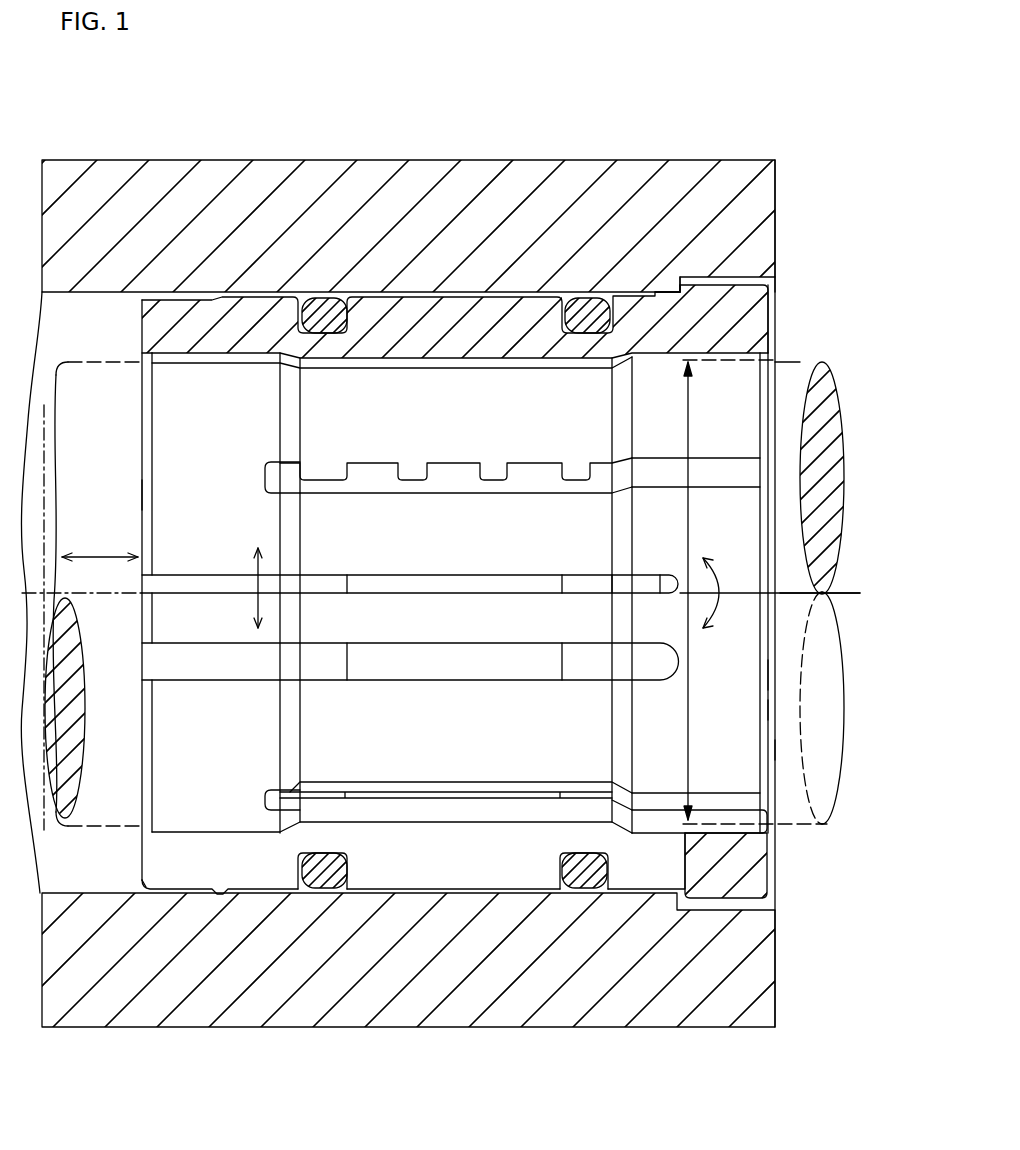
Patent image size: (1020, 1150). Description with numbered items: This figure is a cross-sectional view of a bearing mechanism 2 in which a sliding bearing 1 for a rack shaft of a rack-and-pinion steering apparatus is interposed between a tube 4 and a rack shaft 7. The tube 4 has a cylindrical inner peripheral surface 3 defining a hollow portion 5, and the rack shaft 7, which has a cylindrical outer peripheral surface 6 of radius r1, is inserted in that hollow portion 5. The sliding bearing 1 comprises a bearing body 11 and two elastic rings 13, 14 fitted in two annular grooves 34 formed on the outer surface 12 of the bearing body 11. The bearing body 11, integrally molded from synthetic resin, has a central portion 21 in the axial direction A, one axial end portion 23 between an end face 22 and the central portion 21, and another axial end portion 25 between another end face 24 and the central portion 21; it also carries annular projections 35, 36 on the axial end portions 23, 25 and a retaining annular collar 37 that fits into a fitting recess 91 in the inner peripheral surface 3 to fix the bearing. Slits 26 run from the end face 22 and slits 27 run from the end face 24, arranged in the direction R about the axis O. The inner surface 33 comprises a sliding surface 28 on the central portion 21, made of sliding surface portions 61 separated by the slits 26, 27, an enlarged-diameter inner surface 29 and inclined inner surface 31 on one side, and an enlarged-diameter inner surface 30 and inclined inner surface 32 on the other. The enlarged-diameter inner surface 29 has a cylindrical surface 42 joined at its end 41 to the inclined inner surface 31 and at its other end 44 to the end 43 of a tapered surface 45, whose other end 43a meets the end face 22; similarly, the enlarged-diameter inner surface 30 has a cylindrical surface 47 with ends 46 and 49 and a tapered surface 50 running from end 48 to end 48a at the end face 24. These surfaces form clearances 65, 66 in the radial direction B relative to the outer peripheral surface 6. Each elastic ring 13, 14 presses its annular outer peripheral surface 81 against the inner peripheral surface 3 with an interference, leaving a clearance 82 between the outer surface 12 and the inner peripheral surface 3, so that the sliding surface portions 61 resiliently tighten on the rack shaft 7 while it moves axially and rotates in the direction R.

The sliding bearing 1 is at (153, 893).
The bearing mechanism 2 is at (296, 158).
The inner peripheral surface 3 is at (85, 300).
The tube 4 is at (662, 1012).
The hollow portion 5 is at (55, 335).
The outer peripheral surface 6 is at (802, 385).
The rack shaft 7 is at (100, 792).
The bearing body 11 is at (458, 355).
The outer surface 12 is at (322, 318).
The elastic ring 13 is at (362, 377).
The elastic ring 14 is at (580, 890).
The central portion 21 is at (522, 345).
The end face 22 is at (138, 882).
The axial end portion 23 is at (174, 315).
The end face 24 is at (770, 890).
The axial end portion 25 is at (680, 327).
The slit 26 is at (393, 378).
The slit 27 is at (529, 475).
The sliding surface 28 is at (466, 350).
The enlarged-diameter inner surface 29 is at (175, 441).
The enlarged-diameter inner surface 30 is at (722, 330).
The inclined inner surface 31 is at (240, 812).
The inclined inner surface 32 is at (614, 890).
The inner surface 33 is at (200, 837).
The annular groove 34 is at (322, 875).
The annular projection 35 is at (221, 298).
The annular projection 36 is at (645, 295).
The retaining annular collar 37 is at (713, 372).
The end 41 is at (280, 625).
The cylindrical surface 42 is at (160, 414).
The end 43 is at (155, 380).
The end 43a is at (140, 495).
The end 44 is at (148, 758).
The tapered surface 45 is at (148, 470).
The end 46 is at (632, 623).
The cylindrical surface 47 is at (745, 370).
The end 48 is at (763, 378).
The end 48a is at (771, 677).
The end 49 is at (771, 711).
The tapered surface 50 is at (771, 752).
The sliding surface portion 61 is at (398, 395).
The clearance 65 is at (287, 765).
The clearance 66 is at (663, 828).
The annular outer peripheral surface 81 is at (332, 865).
The clearance 82 is at (318, 875).
The fitting recess 91 is at (752, 288).
The axial direction A is at (98, 557).
The radial direction B is at (257, 578).
The direction R is at (713, 632).
The radius r1 is at (690, 504).
The axis O is at (793, 595).